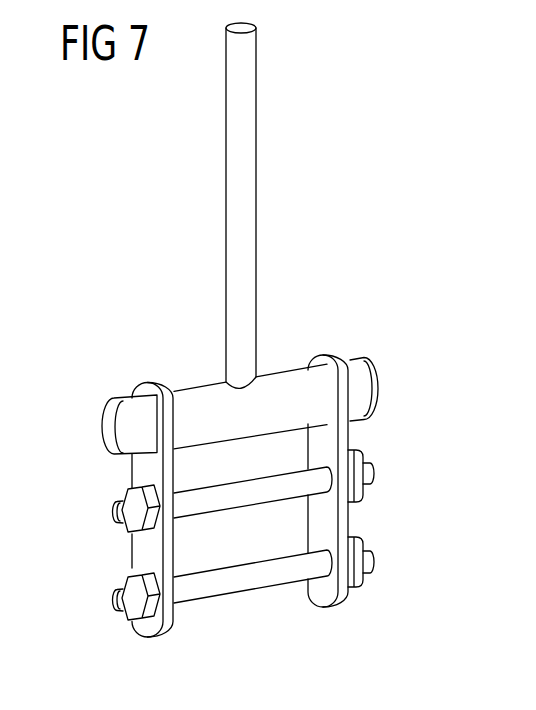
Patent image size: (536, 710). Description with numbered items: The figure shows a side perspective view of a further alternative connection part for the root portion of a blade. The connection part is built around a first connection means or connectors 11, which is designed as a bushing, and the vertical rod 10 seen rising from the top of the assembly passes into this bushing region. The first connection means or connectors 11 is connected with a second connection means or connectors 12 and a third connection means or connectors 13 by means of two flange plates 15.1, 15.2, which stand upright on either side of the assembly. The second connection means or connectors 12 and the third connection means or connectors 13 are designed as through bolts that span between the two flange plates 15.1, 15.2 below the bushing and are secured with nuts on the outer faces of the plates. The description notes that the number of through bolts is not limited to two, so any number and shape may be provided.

The rod 10 is at (243, 202).
The first connection means or connectors 11 is at (363, 393).
The second connection means or connectors 12 is at (372, 474).
The third connection means or connectors 13 is at (373, 562).
The flange plate 15.1 is at (145, 551).
The flange plate 15.2 is at (355, 520).